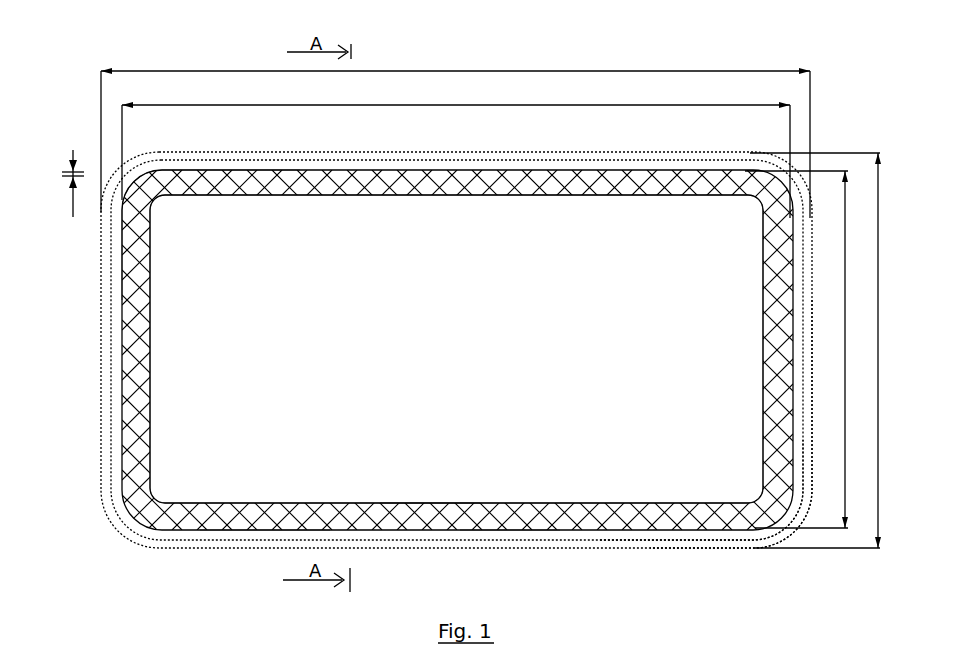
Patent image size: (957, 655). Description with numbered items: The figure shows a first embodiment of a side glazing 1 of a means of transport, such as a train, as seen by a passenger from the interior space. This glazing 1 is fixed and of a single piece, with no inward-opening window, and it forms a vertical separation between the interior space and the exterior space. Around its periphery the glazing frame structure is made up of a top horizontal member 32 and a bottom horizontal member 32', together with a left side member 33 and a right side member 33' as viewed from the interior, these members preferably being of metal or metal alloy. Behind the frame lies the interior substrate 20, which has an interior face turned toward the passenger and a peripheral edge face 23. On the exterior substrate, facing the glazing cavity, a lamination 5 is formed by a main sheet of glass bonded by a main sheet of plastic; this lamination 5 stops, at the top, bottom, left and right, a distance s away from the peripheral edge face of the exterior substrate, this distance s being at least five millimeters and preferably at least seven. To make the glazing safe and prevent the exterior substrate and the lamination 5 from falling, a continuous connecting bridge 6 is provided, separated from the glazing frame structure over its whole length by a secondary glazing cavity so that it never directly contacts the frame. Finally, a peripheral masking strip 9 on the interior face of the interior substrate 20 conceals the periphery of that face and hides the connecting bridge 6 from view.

The side glazing 1 is at (196, 54).
The lamination 5 is at (128, 320).
The connecting bridge 6 is at (425, 513).
The peripheral masking strip 9 is at (275, 522).
The interior substrate 20 is at (440, 420).
The peripheral edge face 23 is at (497, 530).
The top horizontal member 32 is at (457, 311).
The bottom horizontal member 32' is at (701, 519).
The left side member 33 is at (421, 350).
The right side member 33' is at (764, 424).
The distance s is at (65, 184).